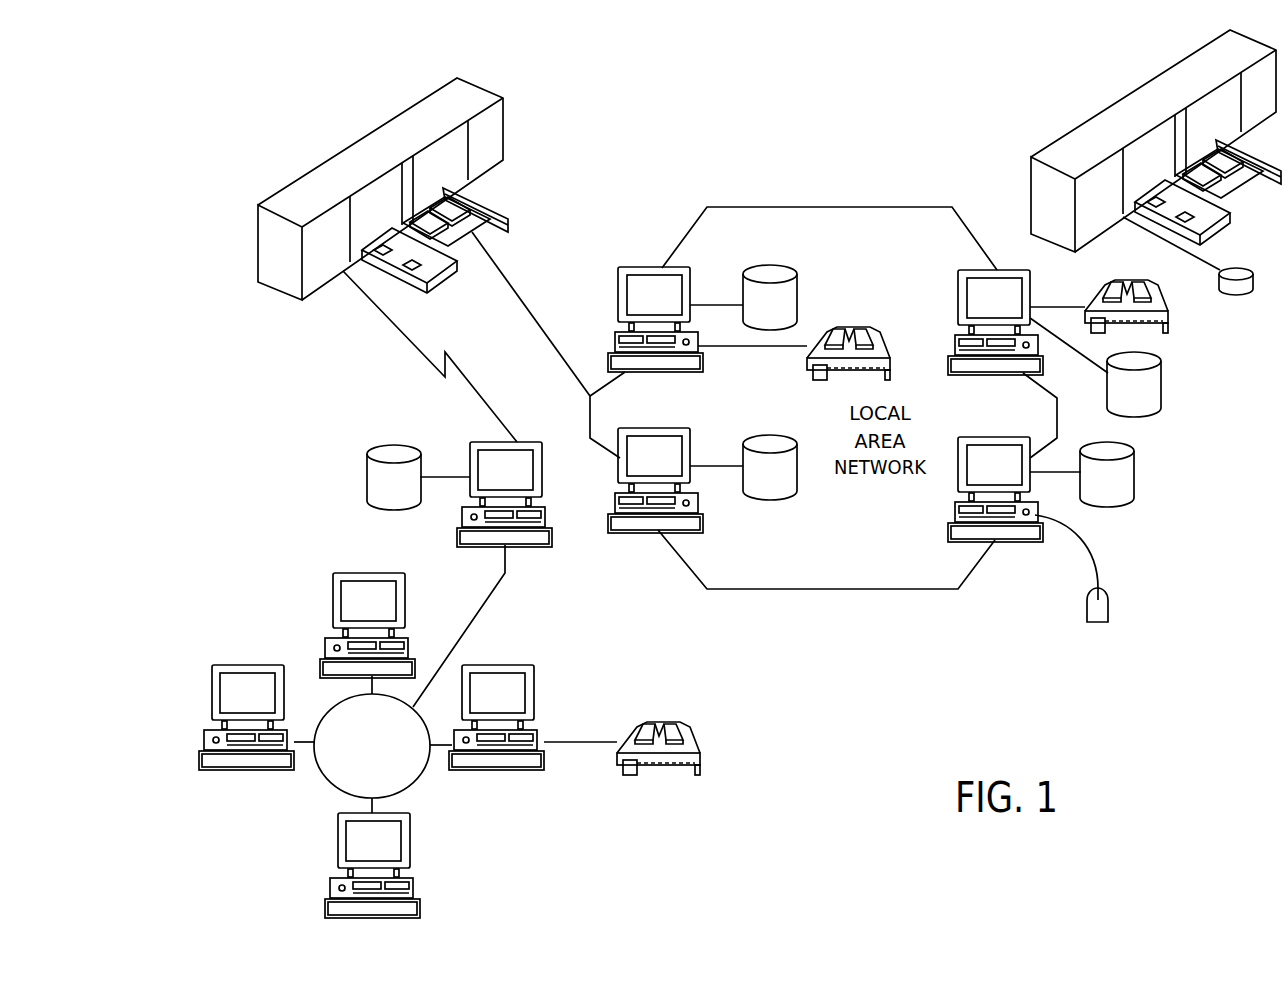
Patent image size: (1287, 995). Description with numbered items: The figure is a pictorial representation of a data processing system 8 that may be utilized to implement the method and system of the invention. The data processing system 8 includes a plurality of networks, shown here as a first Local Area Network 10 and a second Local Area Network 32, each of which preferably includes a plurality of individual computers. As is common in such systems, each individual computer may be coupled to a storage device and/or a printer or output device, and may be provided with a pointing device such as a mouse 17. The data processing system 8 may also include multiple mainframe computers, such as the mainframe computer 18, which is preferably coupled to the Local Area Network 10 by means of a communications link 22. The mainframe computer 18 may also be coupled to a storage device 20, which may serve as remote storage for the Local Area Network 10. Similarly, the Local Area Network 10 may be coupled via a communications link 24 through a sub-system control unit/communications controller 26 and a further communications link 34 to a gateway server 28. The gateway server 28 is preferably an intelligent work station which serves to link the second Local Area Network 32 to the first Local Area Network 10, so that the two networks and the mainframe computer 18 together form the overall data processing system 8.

The data processing system 8 is at (893, 195).
The Local Area Network 10 is at (897, 593).
The mouse 17 is at (1108, 607).
The mainframe computer 18 is at (1113, 103).
The storage device 20 is at (1227, 296).
The communications link 22 is at (999, 207).
The communications link 24 is at (518, 292).
The sub-system control unit/communications controller 26 is at (318, 167).
The gateway server 28 is at (470, 445).
The Local Area Network 32 is at (317, 773).
The communications link 34 is at (377, 317).